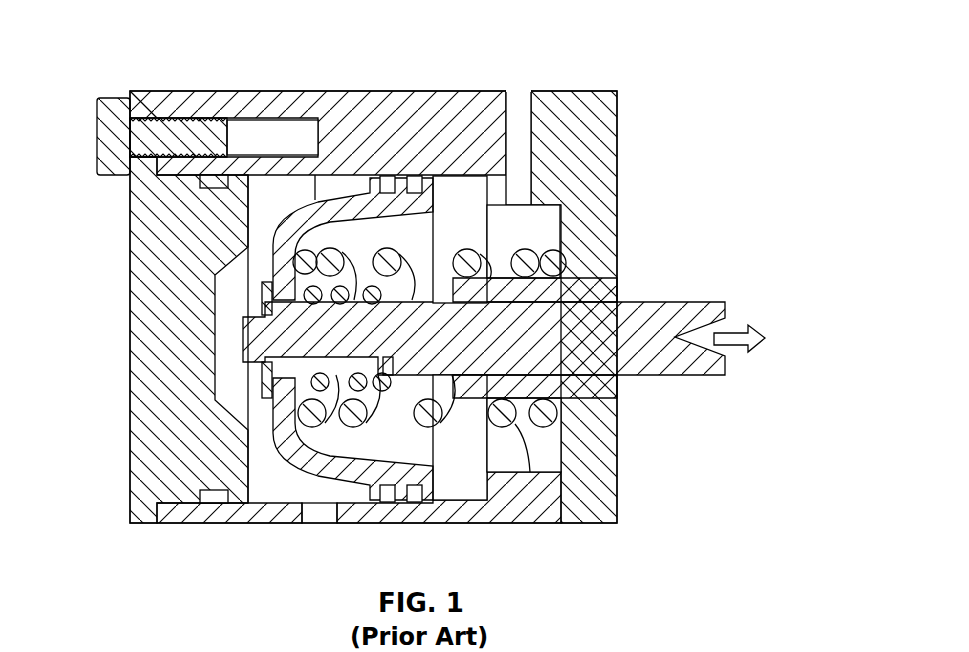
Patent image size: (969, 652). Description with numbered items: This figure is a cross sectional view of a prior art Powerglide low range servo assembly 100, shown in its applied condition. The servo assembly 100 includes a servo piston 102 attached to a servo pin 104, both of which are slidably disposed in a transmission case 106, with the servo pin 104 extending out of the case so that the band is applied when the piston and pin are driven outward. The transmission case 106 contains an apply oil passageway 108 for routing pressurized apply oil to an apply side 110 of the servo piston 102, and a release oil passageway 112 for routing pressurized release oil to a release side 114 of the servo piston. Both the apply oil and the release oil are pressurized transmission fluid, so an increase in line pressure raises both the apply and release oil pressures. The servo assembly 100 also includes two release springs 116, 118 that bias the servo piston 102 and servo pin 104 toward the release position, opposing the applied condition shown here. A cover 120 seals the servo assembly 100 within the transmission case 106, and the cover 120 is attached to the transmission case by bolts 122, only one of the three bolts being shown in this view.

The servo assembly 100 is at (633, 38).
The servo piston 102 is at (293, 470).
The servo pin 104 is at (680, 302).
The transmission case 106 is at (240, 91).
The apply oil passageway 108 is at (302, 525).
The apply side 110 is at (277, 407).
The release oil passageway 112 is at (517, 100).
The release side 114 is at (375, 218).
The release spring 116 is at (497, 428).
The release spring 118 is at (382, 380).
The cover 120 is at (130, 310).
The bolt 122 is at (112, 97).